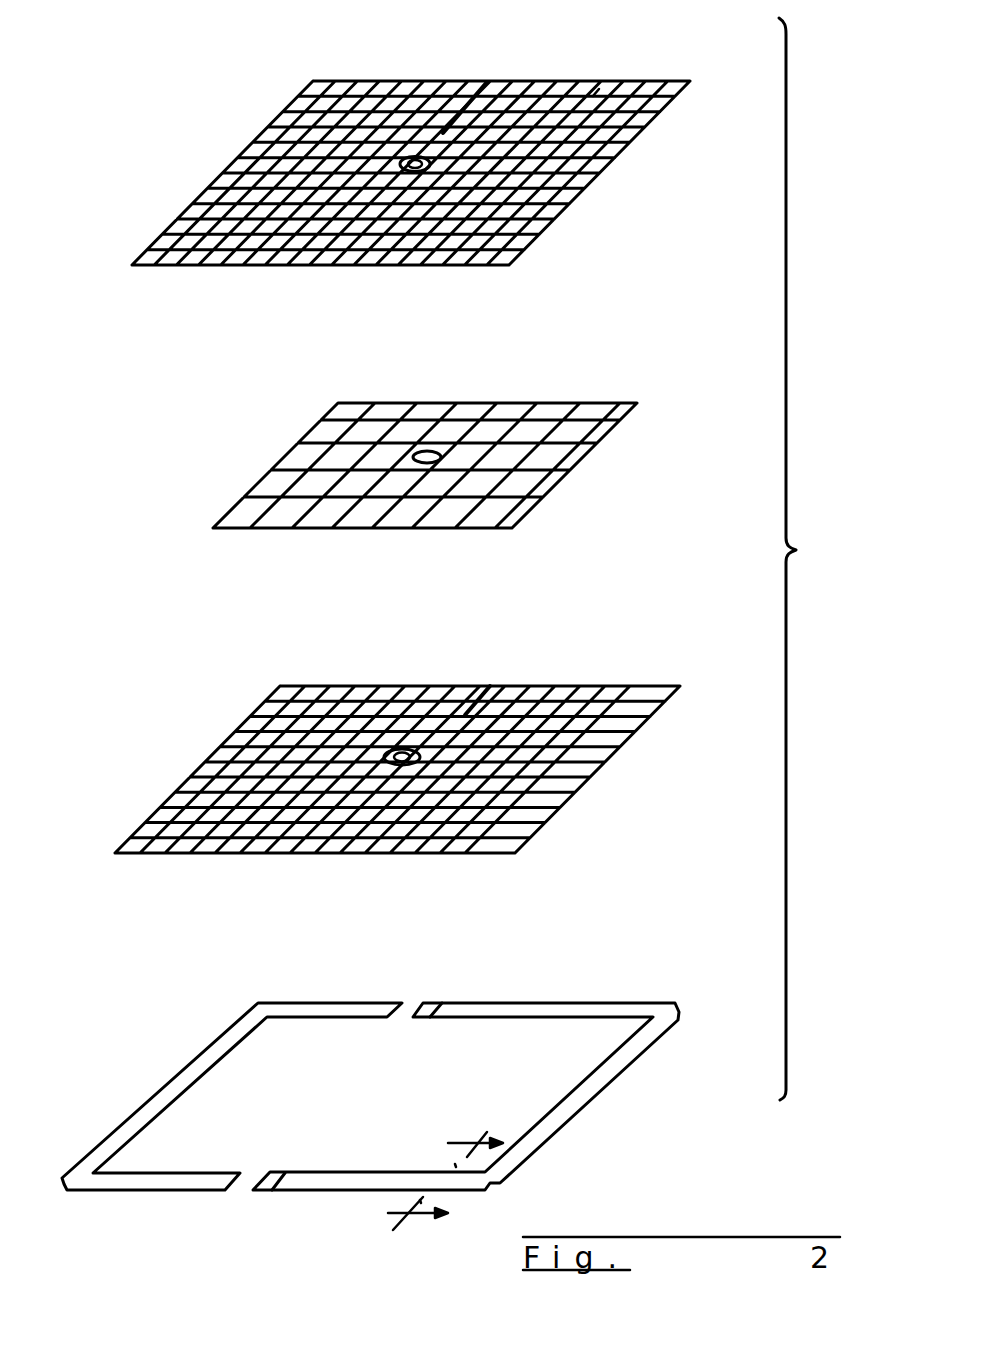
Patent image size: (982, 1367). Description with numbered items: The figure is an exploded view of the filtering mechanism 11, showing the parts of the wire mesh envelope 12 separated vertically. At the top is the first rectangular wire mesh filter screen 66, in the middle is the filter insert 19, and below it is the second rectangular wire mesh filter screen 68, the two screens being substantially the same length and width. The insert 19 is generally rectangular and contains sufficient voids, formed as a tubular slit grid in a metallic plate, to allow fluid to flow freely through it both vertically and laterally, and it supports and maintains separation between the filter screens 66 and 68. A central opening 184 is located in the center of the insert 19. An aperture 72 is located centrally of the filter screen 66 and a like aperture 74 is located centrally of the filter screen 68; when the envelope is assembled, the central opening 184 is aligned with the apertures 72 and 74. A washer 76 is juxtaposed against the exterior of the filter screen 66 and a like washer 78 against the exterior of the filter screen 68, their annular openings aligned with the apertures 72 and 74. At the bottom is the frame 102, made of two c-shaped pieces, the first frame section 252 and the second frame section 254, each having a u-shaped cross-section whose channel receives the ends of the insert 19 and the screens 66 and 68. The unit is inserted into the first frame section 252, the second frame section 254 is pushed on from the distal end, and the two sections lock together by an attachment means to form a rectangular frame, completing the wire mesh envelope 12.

The filtering mechanism 11 is at (119, 170).
The wire mesh envelope 12 is at (730, 1075).
The filter insert 19 is at (607, 435).
The first rectangular wire mesh filter screen 66 is at (689, 80).
The second rectangular wire mesh filter screen 68 is at (680, 686).
The aperture 72 is at (415, 160).
The aperture 74 is at (402, 750).
The washer 76 is at (487, 82).
The washer 78 is at (490, 686).
The frame 102 is at (372, 1154).
The central opening 184 is at (430, 452).
The first frame section 252 is at (166, 1078).
The second frame section 254 is at (603, 1088).